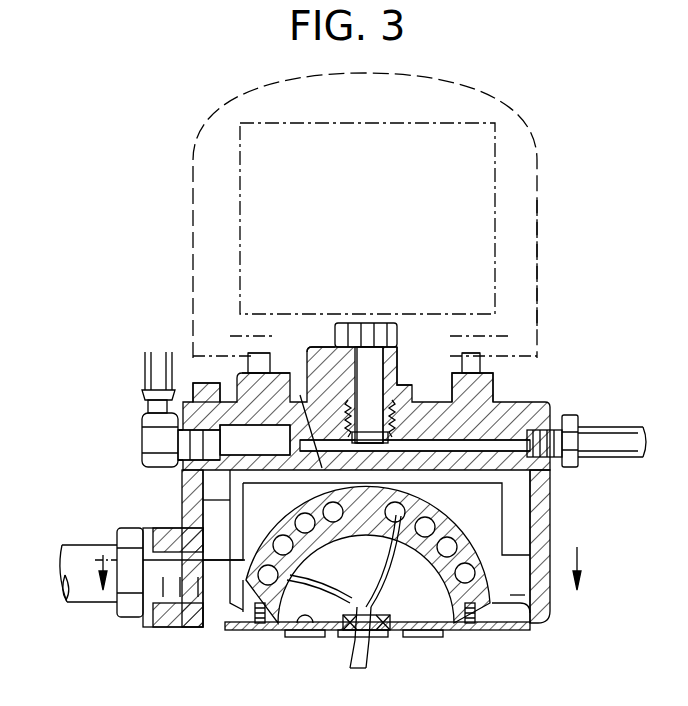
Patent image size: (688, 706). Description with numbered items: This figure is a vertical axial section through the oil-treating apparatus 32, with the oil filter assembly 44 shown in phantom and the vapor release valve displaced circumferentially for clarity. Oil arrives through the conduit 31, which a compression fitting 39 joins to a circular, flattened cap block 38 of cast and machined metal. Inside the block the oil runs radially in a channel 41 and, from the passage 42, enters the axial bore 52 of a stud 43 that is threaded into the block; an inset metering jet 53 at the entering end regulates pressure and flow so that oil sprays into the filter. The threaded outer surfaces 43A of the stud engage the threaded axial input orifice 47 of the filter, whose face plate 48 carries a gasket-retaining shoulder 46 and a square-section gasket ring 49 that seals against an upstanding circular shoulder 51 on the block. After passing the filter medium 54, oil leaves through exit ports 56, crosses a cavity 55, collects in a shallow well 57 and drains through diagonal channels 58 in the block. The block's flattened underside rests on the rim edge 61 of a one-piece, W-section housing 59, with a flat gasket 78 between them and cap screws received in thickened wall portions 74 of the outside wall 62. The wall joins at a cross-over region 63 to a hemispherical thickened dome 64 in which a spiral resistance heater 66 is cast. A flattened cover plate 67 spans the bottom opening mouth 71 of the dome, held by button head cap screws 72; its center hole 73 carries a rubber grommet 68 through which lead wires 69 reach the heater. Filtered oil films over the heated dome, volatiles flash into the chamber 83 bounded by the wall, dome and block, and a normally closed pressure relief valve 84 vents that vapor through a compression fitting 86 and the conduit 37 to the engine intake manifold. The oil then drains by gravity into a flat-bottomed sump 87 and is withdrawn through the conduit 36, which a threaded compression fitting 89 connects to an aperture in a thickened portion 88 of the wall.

The conduit 31 is at (612, 431).
The apparatus 32 is at (560, 147).
The conduit 36 is at (66, 600).
The conduit 37 is at (145, 366).
The cap block 38 is at (546, 404).
The compression fitting 39 is at (566, 455).
The channel 41 is at (478, 448).
The passage 42 is at (327, 477).
The stud 43 is at (399, 381).
The upstanding circumferential outer surfaces 43A is at (337, 337).
The oil filter assembly 44 is at (552, 250).
The gasket-retaining shoulder 46 is at (484, 365).
The threaded axial input orifice 47 is at (397, 325).
The face plate 48 is at (207, 362).
The gasket ring 49 is at (272, 356).
The circular shoulder 51 is at (494, 390).
The axial bore 52 is at (407, 352).
The metering jet 53 is at (361, 323).
The filter medium 54 is at (415, 176).
The cavity 55 is at (282, 358).
The exit ports 56 is at (299, 356).
The well 57 is at (297, 418).
The channels 58 is at (318, 437).
The housing 59 is at (566, 512).
The rim edge 61 is at (207, 484).
The outside wall 62 is at (530, 530).
The cross-over region 63 is at (524, 626).
The dome 64 is at (355, 525).
The heater 66 is at (420, 542).
The cover plate 67 is at (410, 634).
The rubber grommet 68 is at (375, 618).
The lead wires 69 is at (327, 626).
The bottom opening mouth 71 is at (284, 619).
The button head cap screws 72 is at (259, 630).
The center hole 73 is at (388, 634).
The thickened wall portions 74 is at (208, 501).
The flat gasket 78 is at (556, 476).
The chamber 83 is at (557, 558).
The pressure relief valve 84 is at (178, 462).
The compression fitting 86 is at (152, 440).
The sump 87 is at (514, 597).
The thickened portion 88 is at (181, 521).
The threaded compression fitting 89 is at (133, 618).